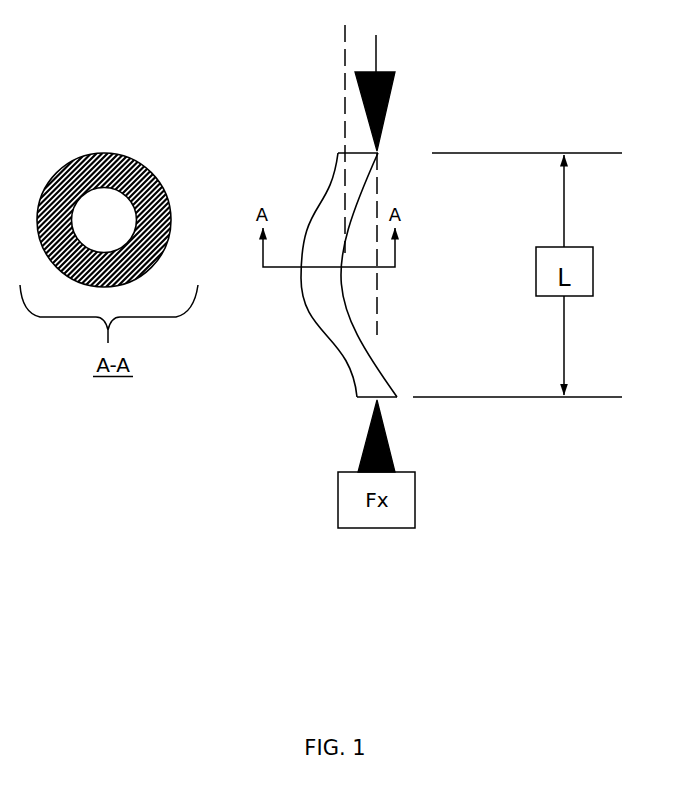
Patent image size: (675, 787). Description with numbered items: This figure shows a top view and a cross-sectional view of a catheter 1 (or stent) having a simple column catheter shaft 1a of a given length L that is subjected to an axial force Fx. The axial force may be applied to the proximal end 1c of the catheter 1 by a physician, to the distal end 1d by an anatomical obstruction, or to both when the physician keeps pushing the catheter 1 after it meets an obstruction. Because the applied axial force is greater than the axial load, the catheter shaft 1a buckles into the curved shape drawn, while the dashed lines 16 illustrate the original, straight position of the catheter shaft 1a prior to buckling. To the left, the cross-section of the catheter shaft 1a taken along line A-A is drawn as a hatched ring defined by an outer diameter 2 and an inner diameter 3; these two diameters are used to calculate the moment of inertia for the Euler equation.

The catheter 1 is at (323, 271).
The catheter shaft 1a is at (334, 342).
The proximal end 1c is at (355, 399).
The distal end 1d is at (380, 151).
The outer diameter 2 is at (132, 152).
The inner diameter 3 is at (88, 187).
The lines 16 is at (345, 35).